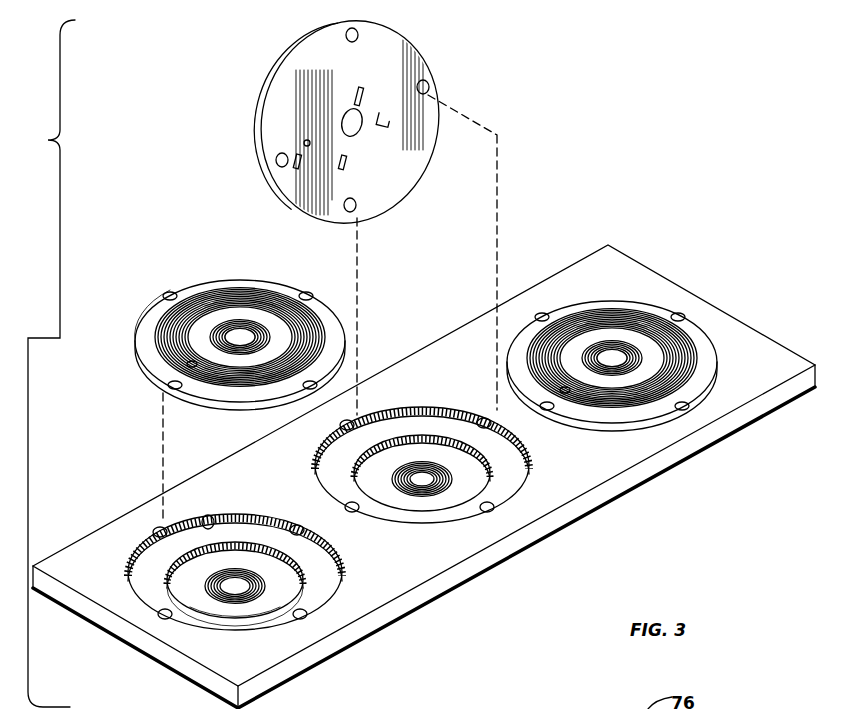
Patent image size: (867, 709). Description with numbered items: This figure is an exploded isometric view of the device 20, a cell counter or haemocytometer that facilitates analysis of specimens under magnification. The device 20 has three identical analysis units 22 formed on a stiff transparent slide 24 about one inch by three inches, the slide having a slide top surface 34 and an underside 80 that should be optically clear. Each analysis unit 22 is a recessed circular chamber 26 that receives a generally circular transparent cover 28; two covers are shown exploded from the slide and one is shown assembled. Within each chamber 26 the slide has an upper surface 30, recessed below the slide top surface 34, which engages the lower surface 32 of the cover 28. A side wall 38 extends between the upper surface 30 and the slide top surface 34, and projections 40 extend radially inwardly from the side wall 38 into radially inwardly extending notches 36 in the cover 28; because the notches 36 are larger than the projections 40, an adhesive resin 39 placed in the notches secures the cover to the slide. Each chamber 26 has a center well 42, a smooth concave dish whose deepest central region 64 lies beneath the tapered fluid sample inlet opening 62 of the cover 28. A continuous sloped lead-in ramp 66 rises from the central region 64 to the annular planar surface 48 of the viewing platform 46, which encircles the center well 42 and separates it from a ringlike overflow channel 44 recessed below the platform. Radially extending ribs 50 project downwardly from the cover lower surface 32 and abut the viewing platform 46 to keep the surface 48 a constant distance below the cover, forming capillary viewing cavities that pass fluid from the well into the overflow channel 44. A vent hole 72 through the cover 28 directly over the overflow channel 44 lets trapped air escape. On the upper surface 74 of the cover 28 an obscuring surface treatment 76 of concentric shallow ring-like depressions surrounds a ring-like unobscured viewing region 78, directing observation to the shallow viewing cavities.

The device 20 is at (424, 387).
The analysis unit 22 is at (411, 468).
The slide 24 is at (424, 476).
The chamber 26 is at (335, 561).
The cover 28 is at (443, 231).
The upper surface 30 is at (331, 572).
The lower surface 32 is at (320, 217).
The slide top surface 34 is at (268, 475).
The notch 36 is at (346, 30).
The side wall 38 is at (208, 517).
The adhesive resin 39 is at (698, 392).
The projection 40 is at (290, 524).
The center well 42 is at (424, 470).
The overflow channel 44 is at (212, 614).
The viewing platform 46 is at (305, 582).
The annular planar surface 48 is at (203, 587).
The rib 50 is at (362, 92).
The fluid sample inlet opening 62 is at (241, 334).
The central region 64 is at (432, 470).
The lead-in ramp 66 is at (452, 460).
The vent hole 72 is at (306, 141).
The upper surface 74 is at (298, 286).
The obscuring surface treatment 76 is at (148, 338).
The unobscured viewing region 78 is at (185, 328).
The underside 80 is at (484, 582).